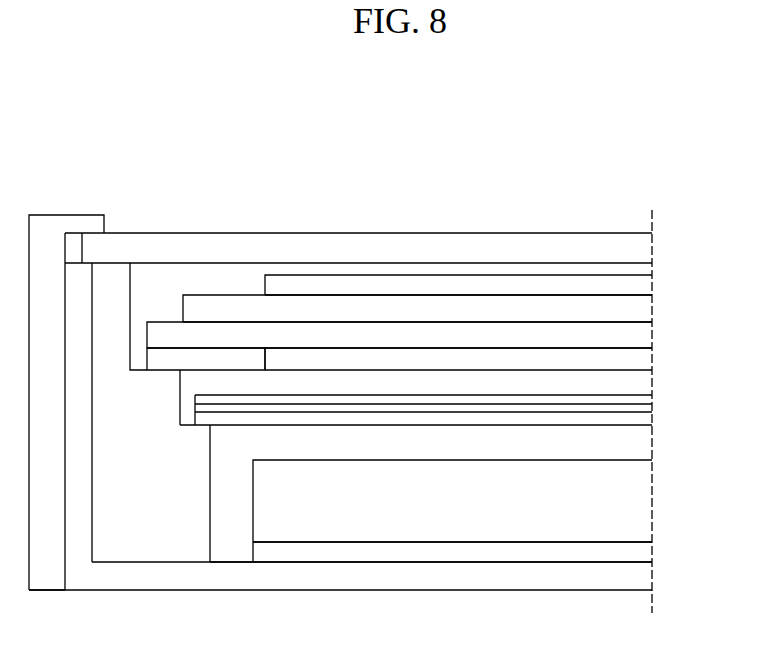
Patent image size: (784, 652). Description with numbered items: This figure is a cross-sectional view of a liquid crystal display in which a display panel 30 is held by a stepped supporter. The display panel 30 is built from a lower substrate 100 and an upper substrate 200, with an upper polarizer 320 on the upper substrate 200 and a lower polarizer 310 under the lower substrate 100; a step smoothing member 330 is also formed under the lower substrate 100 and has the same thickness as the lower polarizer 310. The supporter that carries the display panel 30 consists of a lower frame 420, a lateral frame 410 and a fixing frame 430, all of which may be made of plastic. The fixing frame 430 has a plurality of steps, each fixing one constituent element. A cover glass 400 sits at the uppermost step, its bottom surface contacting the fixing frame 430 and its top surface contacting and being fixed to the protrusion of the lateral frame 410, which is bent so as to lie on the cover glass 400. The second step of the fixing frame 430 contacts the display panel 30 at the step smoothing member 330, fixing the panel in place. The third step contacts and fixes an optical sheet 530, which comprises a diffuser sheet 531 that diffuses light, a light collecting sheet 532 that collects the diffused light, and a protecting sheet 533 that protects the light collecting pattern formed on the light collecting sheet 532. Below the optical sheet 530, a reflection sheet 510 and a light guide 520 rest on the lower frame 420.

The display panel 30 is at (453, 320).
The lower substrate 100 is at (649, 334).
The upper substrate 200 is at (649, 309).
The lower polarizer 310 is at (490, 360).
The upper polarizer 320 is at (649, 285).
The step smoothing member 330 is at (223, 353).
The cover glass 400 is at (649, 249).
The lateral frame 410 is at (47, 590).
The lower frame 420 is at (649, 577).
The fixing frame 430 is at (147, 543).
The reflection sheet 510 is at (649, 552).
The light guide 520 is at (649, 500).
The optical sheet 530 is at (476, 418).
The diffuser sheet 531 is at (649, 424).
The light collecting sheet 532 is at (649, 409).
The protecting sheet 533 is at (649, 393).